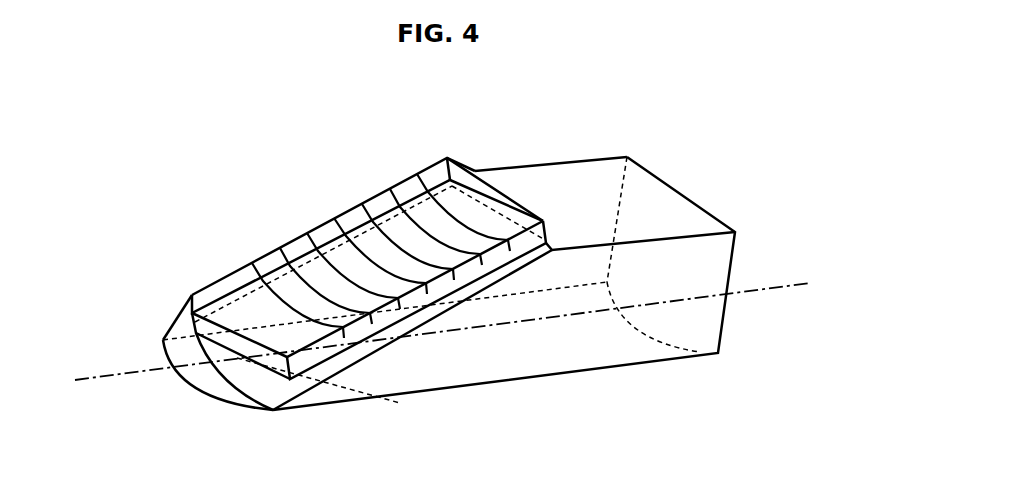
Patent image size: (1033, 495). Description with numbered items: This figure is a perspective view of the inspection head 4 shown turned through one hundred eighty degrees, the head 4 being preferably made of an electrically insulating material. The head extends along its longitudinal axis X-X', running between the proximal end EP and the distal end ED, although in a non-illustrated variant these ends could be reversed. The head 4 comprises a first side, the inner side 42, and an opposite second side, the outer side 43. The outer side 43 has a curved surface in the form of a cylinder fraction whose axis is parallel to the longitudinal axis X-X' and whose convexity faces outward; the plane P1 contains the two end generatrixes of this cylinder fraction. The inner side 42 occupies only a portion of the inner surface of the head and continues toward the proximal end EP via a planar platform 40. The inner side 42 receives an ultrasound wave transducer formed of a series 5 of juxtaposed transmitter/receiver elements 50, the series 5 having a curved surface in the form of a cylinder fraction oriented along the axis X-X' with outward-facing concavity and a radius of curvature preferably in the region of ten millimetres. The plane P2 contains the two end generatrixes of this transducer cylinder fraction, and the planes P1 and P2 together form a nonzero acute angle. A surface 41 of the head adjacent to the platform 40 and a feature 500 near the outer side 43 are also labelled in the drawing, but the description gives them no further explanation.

The inspection head 4 is at (447, 275).
The series of juxtaposed transmitter/receiver elements 5 is at (353, 238).
The planar platform 40 is at (645, 195).
The upper face of body 41 is at (594, 214).
The first side (inner side) 42 is at (411, 324).
The second side (outer side) 43 is at (230, 419).
The transmitter/receiver element 50 is at (360, 256).
The lower edge of insert 500 is at (268, 365).
The plane containing the two end generatrixes of the cylinder fraction of the second P1 is at (196, 343).
The plane containing the two end generatrixes of the cylinder fraction of the wave t P2 is at (452, 172).
The longitudinal axis X-X' X is at (436, 331).
The longitudinal axis X- X' is at (808, 248).
The proximal end EP is at (142, 326).
The distal end ED is at (783, 199).